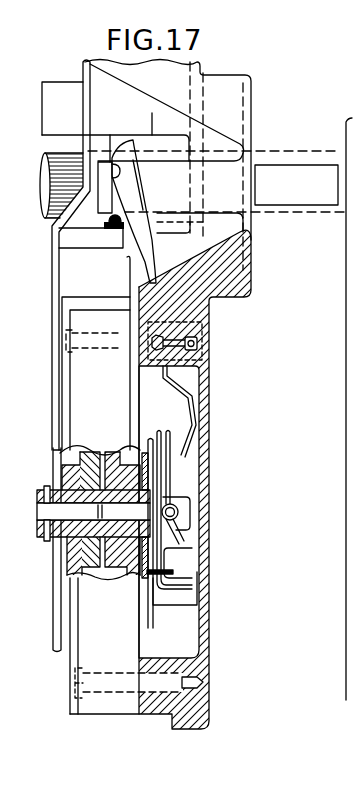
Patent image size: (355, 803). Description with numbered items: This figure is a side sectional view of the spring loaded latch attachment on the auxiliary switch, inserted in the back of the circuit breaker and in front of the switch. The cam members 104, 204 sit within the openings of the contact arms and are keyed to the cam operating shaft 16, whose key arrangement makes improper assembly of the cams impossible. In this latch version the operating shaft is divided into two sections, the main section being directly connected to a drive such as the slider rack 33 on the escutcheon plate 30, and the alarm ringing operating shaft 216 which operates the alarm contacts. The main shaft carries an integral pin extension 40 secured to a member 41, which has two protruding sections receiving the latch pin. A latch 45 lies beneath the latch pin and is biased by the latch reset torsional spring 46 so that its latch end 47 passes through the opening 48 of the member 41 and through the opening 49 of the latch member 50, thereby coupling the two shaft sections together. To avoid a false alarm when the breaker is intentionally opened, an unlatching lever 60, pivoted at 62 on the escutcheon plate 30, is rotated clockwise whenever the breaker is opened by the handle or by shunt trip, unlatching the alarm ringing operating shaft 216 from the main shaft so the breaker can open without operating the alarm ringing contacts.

The keyed operating shaft 16 is at (43, 528).
The escutcheon plate 30 is at (30, 548).
The slider rack 33 is at (50, 378).
The integral pin extension 40 is at (133, 518).
The member 41 is at (160, 542).
The latch 45 is at (173, 575).
The latch reset torsional spring 46 is at (177, 496).
The latch end 47 is at (163, 578).
The opening 48 is at (162, 560).
The opening 49 is at (147, 580).
The latch member 50 is at (157, 624).
The unlatching lever 60 is at (190, 384).
The pivot 62 is at (167, 342).
The cam member 104 is at (88, 452).
The cam member 204 is at (113, 453).
The alarm ringing operating shaft 216 is at (128, 578).